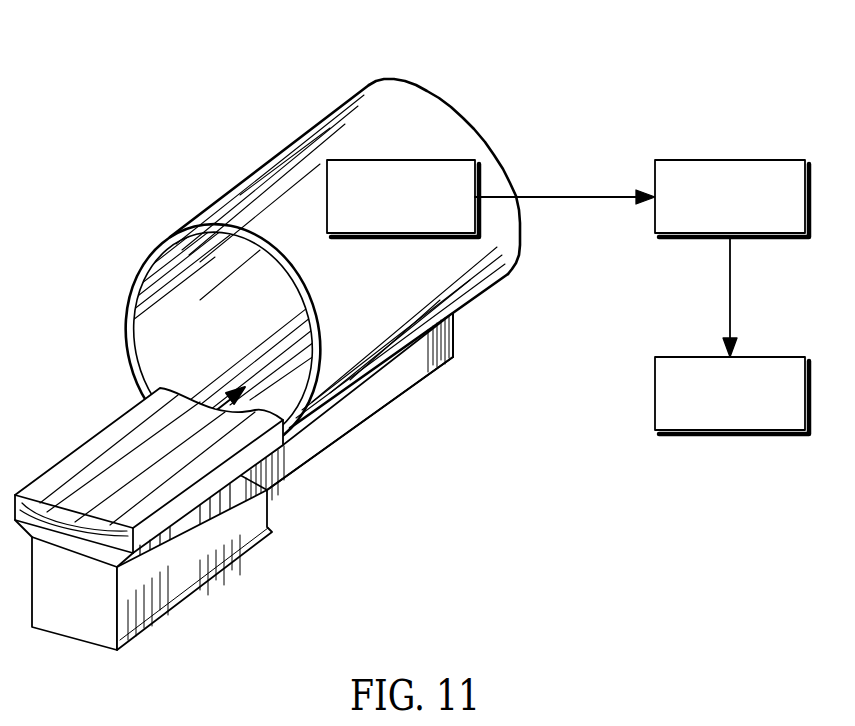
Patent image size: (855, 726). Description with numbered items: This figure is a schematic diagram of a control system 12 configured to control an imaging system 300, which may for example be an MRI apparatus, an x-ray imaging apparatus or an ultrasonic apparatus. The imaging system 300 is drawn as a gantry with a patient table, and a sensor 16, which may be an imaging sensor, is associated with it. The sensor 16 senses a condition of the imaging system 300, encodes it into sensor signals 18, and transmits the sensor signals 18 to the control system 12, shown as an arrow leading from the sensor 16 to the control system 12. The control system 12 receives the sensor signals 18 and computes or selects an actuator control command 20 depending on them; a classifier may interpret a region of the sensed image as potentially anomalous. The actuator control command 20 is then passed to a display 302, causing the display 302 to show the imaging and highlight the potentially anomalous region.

The imaging system 300 is at (158, 65).
The sensor 16 is at (400, 160).
The sensor signals 18 is at (566, 196).
The control system 12 is at (728, 160).
The actuator control command 20 is at (728, 292).
The display 302 is at (655, 392).